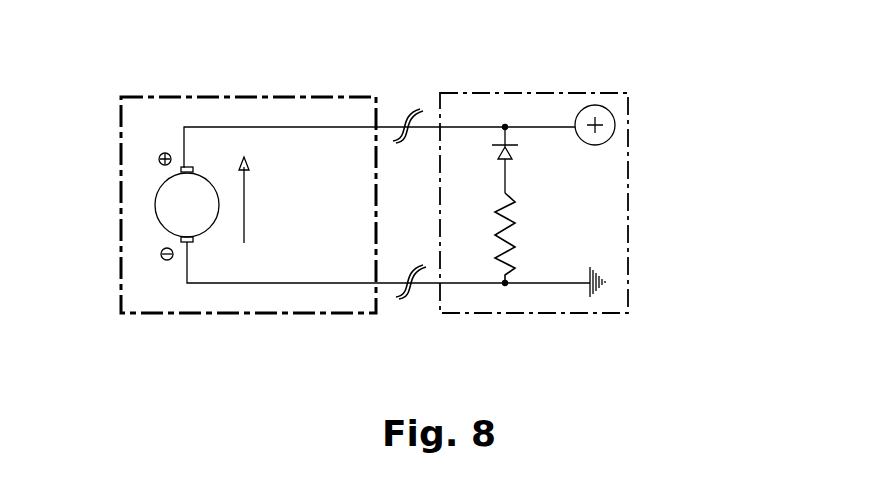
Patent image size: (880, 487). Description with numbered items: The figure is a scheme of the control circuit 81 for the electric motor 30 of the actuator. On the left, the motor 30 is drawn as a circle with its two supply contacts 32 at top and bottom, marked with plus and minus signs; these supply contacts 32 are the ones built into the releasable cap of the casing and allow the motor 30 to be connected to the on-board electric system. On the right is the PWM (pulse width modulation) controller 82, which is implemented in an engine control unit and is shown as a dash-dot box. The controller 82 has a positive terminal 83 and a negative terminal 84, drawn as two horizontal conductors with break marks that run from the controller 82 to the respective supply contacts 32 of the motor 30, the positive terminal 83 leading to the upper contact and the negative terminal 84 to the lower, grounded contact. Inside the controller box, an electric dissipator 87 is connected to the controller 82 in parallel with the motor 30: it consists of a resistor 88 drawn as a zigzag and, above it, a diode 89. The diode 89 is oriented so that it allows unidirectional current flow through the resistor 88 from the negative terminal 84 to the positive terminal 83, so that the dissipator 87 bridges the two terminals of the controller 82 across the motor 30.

The electric motor 30 is at (155, 205).
The supply contacts 32 is at (187, 167).
The control circuit 81 is at (327, 336).
The PWM controller 82 is at (573, 93).
The positive terminal 83 is at (440, 135).
The negative terminal 84 is at (441, 272).
The electric dissipator 87 is at (523, 265).
The resistor 88 is at (512, 243).
The diode 89 is at (505, 172).